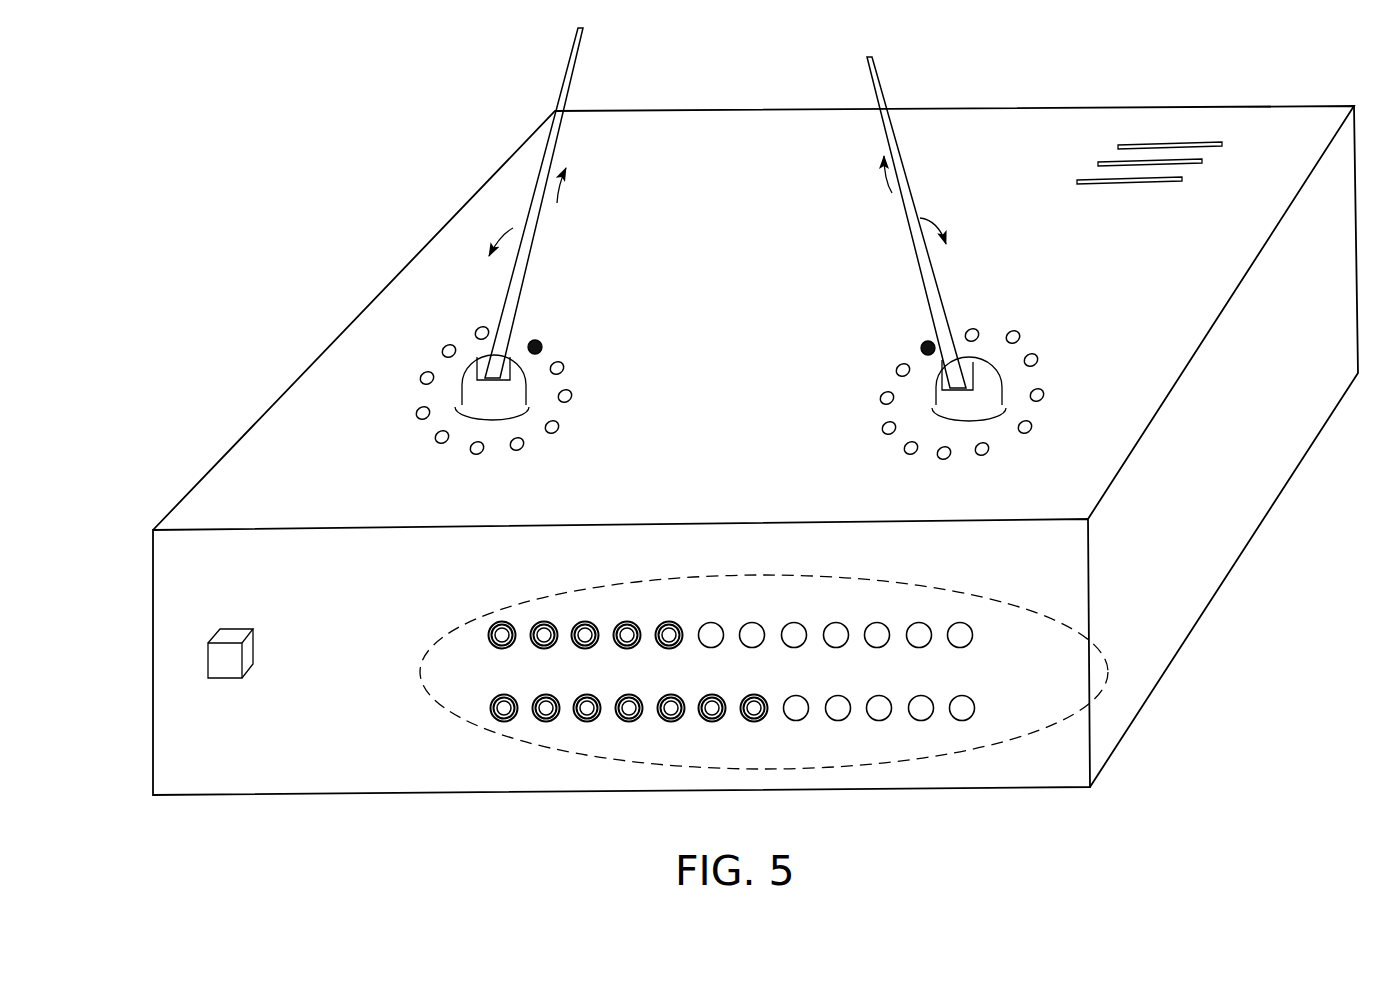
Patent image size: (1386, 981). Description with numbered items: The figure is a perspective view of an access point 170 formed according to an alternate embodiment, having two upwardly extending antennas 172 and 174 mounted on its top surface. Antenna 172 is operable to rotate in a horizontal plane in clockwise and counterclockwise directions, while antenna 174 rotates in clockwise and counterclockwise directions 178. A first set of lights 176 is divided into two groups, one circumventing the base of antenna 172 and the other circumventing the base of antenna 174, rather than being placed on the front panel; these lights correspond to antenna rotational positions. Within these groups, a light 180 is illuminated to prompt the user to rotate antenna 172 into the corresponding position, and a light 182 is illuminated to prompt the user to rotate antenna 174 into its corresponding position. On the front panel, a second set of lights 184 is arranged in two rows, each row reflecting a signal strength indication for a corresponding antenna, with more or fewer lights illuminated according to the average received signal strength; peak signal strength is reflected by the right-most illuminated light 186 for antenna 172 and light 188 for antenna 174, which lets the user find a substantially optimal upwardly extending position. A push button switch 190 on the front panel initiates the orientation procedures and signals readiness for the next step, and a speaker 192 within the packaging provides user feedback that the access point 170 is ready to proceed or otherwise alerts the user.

The access point 170 is at (991, 800).
The antenna 172 is at (548, 268).
The antenna 174 is at (952, 281).
The first set of lights 176 is at (545, 462).
The clockwise and counterclockwise directions 178 is at (1025, 480).
The light 180 is at (558, 336).
The light 182 is at (918, 334).
The second set of lights 184 is at (443, 720).
The light 186 is at (687, 607).
The light 188 is at (764, 735).
The push button switch 190 is at (219, 697).
The speaker 192 is at (1111, 214).